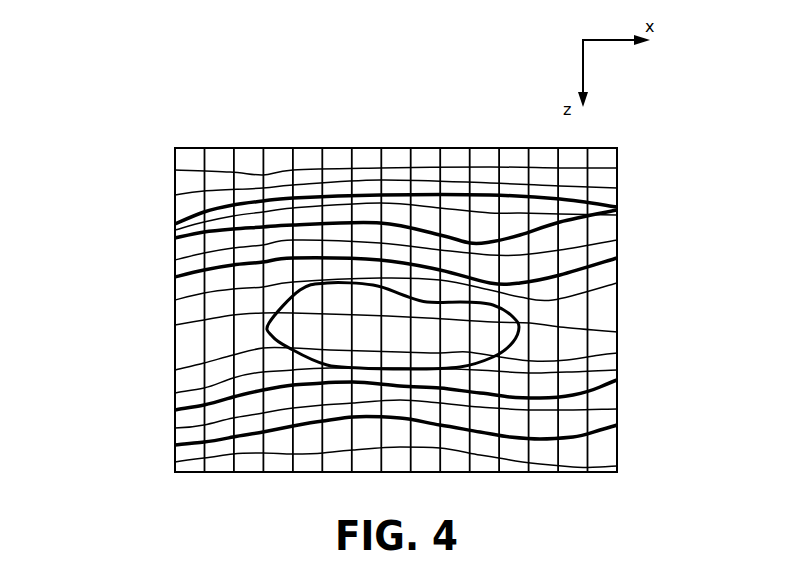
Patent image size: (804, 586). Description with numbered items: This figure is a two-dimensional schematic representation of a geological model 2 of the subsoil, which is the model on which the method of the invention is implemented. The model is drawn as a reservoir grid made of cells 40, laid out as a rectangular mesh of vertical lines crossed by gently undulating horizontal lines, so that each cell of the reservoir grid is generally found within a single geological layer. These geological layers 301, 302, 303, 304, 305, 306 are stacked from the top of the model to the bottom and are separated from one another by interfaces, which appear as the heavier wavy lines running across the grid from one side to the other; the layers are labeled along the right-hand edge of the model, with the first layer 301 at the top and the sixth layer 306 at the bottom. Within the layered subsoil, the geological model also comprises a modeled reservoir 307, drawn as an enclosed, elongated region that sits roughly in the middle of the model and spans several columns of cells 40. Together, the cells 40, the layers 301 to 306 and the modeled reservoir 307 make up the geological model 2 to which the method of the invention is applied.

The geological model 2 is at (140, 154).
The cells 40 is at (223, 338).
The geological layer 301 is at (622, 171).
The geological layer 302 is at (624, 203).
The geological layer 303 is at (622, 240).
The geological layer 304 is at (620, 321).
The geological layer 305 is at (620, 418).
The geological layer 306 is at (615, 460).
The modeled reservoir 307 is at (338, 304).